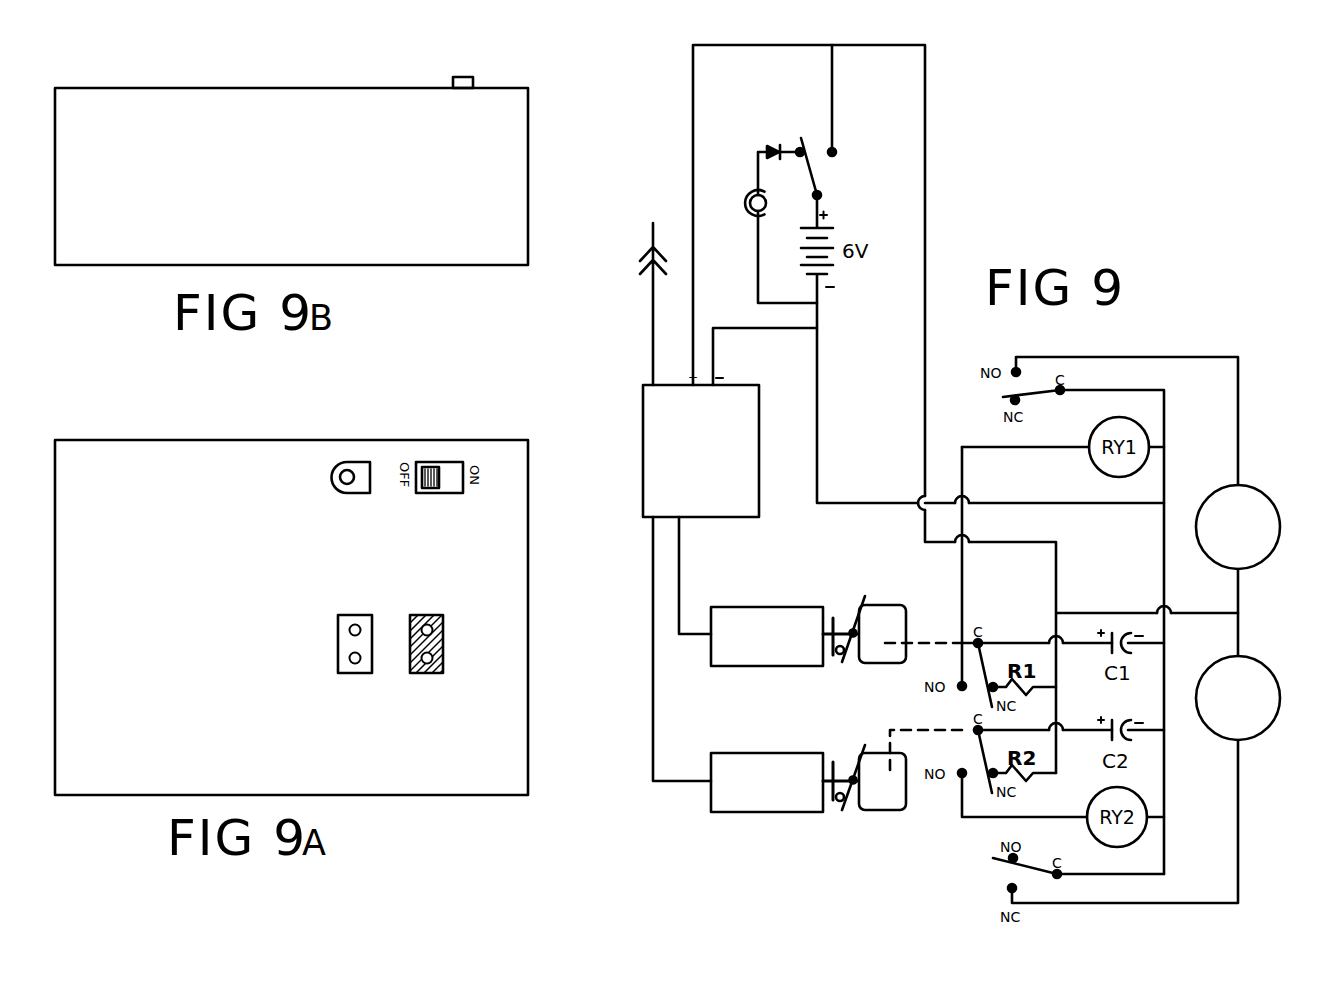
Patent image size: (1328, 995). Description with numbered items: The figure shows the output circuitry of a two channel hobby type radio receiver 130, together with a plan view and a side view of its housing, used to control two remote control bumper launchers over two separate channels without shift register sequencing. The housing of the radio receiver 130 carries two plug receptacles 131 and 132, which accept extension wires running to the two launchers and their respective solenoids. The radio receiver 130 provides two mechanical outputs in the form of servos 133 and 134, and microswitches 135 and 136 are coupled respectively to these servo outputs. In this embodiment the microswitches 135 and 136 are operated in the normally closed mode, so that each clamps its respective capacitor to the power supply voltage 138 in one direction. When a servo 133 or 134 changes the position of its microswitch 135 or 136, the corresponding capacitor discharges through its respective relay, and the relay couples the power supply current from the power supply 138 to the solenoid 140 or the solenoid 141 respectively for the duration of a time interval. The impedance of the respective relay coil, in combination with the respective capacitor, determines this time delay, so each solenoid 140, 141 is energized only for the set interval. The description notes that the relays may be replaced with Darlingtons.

In FIG. 9B, the two channel radio receiver 130 is at (528, 137).
In FIG. 9A, the two channel radio receiver 130 is at (528, 718).
In FIG. 9, the two channel radio receiver 130 is at (643, 407).
In FIG. 9A, the plug receptacle 131 is at (357, 614).
In FIG. 9A, the plug receptacle 132 is at (428, 674).
In FIG. 9, the servo 133 is at (793, 606).
In FIG. 9, the servo 134 is at (793, 752).
In FIG. 9, the microswitch 135 is at (886, 665).
In FIG. 9, the microswitch 136 is at (886, 812).
In FIG. 9, the power supply voltage 138 is at (843, 210).
In FIG. 9, the solenoid 140 is at (1276, 508).
In FIG. 9, the solenoid 141 is at (1275, 678).